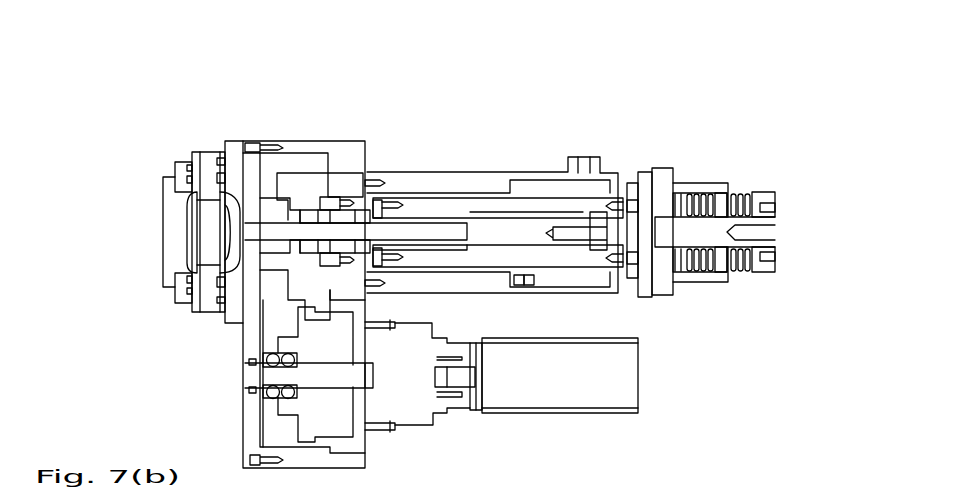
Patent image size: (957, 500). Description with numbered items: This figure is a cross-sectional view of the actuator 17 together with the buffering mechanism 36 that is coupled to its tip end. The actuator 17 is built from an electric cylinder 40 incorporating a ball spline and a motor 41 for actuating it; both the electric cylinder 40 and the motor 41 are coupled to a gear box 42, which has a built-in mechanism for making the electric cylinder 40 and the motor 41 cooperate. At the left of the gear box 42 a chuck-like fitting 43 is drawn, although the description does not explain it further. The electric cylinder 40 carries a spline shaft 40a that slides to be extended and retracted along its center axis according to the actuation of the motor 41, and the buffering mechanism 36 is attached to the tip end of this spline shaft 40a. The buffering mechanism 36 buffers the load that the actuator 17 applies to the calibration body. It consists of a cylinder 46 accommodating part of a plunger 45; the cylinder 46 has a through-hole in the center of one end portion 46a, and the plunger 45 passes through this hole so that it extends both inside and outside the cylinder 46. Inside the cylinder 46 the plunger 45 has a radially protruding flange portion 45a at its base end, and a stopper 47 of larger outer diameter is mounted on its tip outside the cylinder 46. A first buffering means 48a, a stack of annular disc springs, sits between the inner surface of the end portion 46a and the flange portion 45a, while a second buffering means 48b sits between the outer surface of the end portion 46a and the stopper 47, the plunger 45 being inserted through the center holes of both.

The actuator 17 is at (662, 87).
The buffering mechanism 36 is at (763, 142).
The electric cylinder 40 is at (507, 147).
The spline shaft 40a is at (441, 226).
The motor 41 is at (558, 415).
The gear box 42 is at (297, 140).
The chuck 43 is at (197, 328).
The plunger 45 is at (720, 223).
The flange portion 45a is at (683, 267).
The cylinder 46 is at (700, 183).
The one end portion 46a is at (752, 176).
The stopper 47 is at (775, 196).
The first buffering means 48a is at (703, 267).
The second buffering means 48b is at (743, 268).